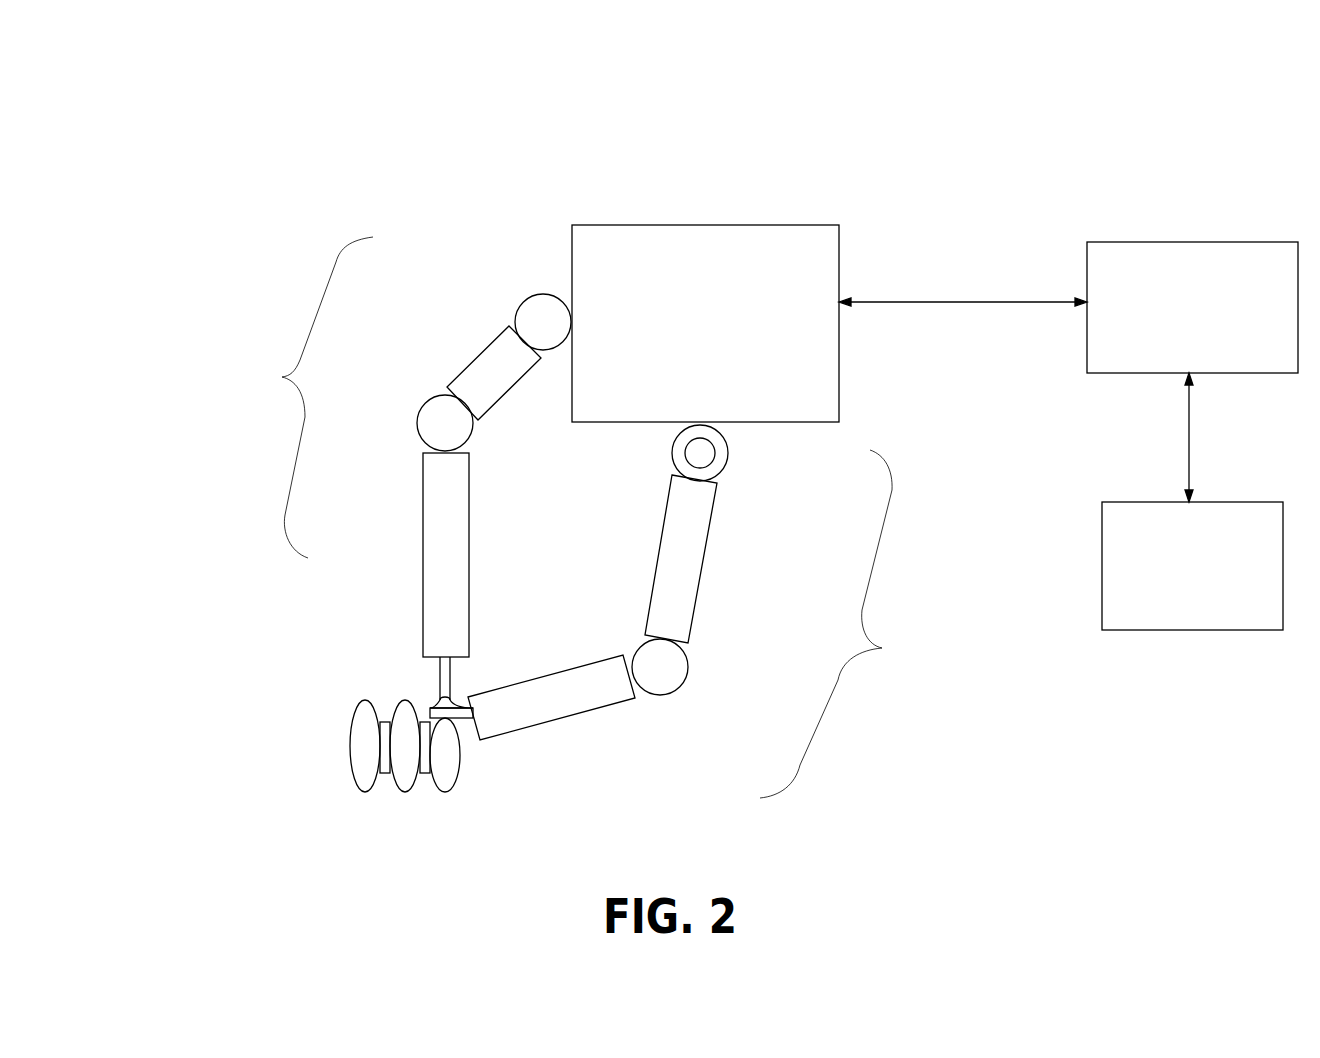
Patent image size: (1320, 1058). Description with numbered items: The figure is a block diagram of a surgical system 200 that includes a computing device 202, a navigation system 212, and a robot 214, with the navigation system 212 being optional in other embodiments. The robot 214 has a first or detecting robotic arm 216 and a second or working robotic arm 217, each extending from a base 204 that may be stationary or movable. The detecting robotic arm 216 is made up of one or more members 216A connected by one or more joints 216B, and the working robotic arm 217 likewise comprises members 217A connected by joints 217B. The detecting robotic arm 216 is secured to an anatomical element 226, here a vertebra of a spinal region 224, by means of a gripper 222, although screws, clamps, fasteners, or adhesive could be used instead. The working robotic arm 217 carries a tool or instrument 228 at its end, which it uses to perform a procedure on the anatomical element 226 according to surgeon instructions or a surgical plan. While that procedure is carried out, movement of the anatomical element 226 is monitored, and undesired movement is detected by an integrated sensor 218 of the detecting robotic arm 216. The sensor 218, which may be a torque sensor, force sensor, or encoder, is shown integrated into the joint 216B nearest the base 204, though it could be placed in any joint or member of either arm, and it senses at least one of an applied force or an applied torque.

The system 200 is at (208, 138).
The computing device 202 is at (1192, 307).
The base 204 is at (705, 323).
The navigation system 212 is at (1192, 566).
The robot 214 is at (525, 178).
The first or detecting robotic arm 216 is at (843, 624).
The member 216A is at (703, 557).
The joint 216B is at (728, 452).
The second or working robotic arm 217 is at (302, 397).
The member 217A is at (478, 357).
The joint 217B is at (520, 303).
The sensor 218 is at (712, 462).
The gripper 222 is at (462, 718).
The spinal region 224 is at (380, 808).
The anatomical element 226 is at (457, 780).
The tool or instrument 228 is at (440, 680).